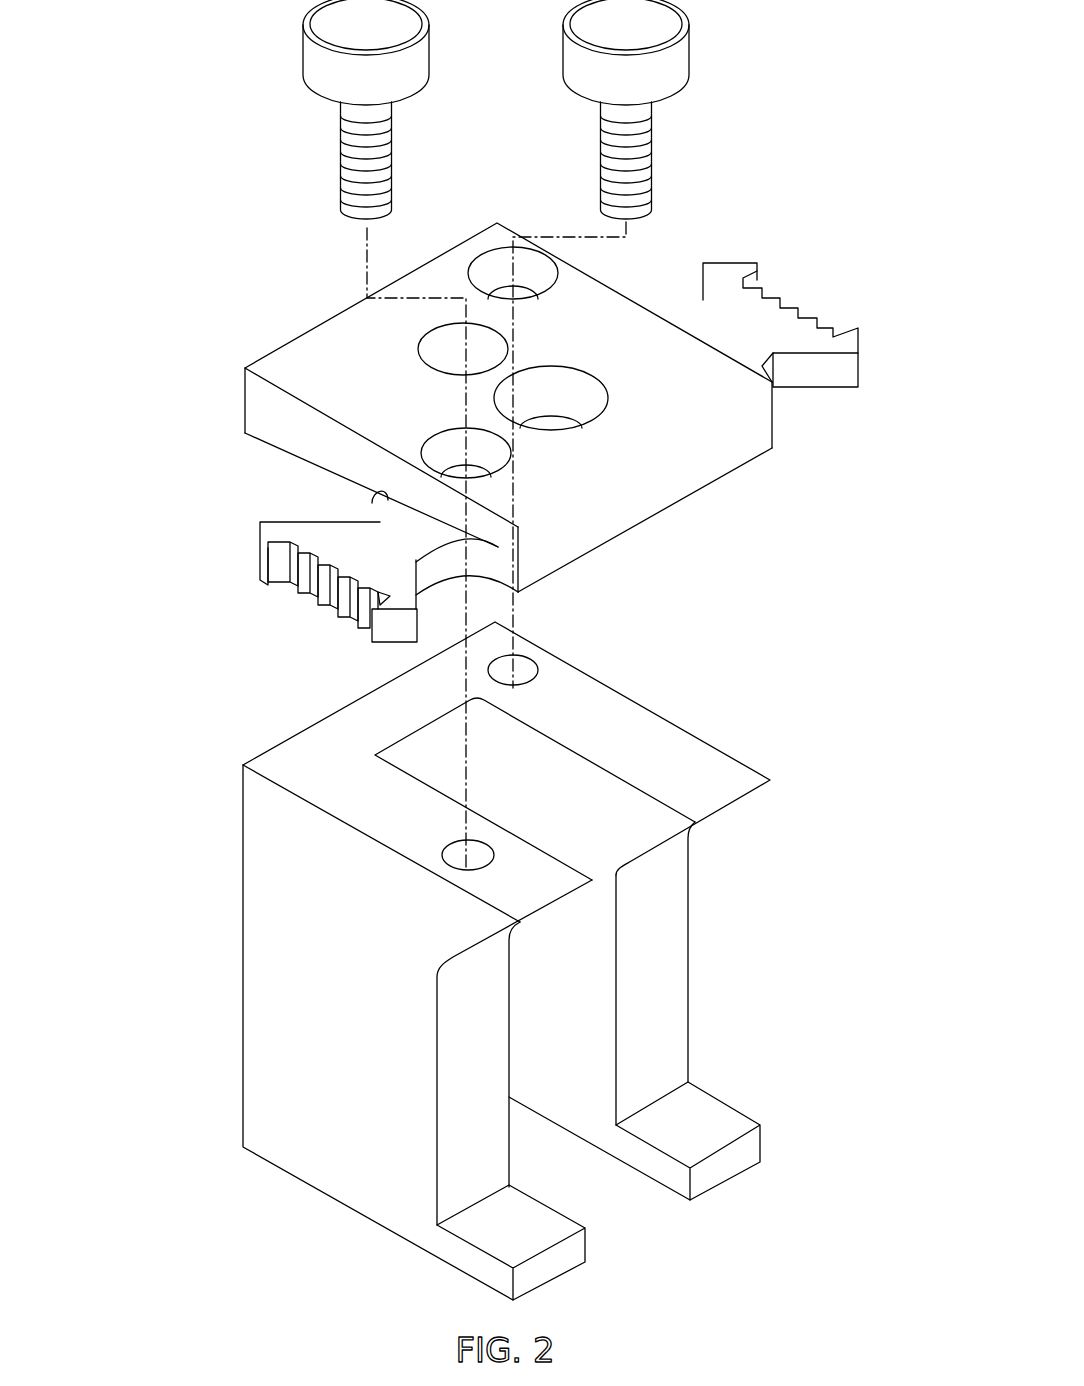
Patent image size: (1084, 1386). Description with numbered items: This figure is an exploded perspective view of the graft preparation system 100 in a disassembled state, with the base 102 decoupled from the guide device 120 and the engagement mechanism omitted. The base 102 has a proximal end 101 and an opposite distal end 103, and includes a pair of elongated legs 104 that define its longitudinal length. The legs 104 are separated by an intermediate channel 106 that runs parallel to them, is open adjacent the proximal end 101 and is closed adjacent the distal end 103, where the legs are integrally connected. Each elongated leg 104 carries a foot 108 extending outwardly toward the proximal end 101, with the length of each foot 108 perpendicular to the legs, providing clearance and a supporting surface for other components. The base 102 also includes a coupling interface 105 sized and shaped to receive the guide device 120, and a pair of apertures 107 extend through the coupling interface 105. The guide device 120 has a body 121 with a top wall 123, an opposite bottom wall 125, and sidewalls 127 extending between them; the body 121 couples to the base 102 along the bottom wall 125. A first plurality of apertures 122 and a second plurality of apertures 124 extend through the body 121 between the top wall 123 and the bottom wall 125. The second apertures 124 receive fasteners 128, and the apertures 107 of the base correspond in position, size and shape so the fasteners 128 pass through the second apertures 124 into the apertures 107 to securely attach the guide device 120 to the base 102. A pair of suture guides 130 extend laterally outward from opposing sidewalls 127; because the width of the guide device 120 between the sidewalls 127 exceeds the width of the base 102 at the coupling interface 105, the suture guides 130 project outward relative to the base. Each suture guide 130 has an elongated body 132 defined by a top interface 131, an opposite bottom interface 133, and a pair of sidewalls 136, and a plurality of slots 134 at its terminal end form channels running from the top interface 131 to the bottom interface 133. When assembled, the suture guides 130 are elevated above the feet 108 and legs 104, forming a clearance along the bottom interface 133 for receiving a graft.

The graft preparation system 100 is at (150, 100).
The proximal end 101 is at (820, 1214).
The base 102 is at (205, 905).
The distal end 103 is at (200, 745).
The elongated legs 104 is at (690, 972).
The coupling interface 105 is at (266, 762).
The intermediate channel 106 is at (580, 1060).
The apertures 107 is at (540, 665).
The foot 108 is at (552, 1222).
The guide device 120 is at (225, 402).
The body 121 is at (636, 396).
The first plurality of apertures 122 is at (428, 348).
The top wall 123 is at (298, 347).
The second plurality of apertures 124 is at (494, 262).
The bottom wall 125 is at (704, 488).
The sidewalls 127 is at (248, 394).
The fasteners 128 is at (308, 60).
The suture guides 130 is at (835, 235).
The top interface 131 is at (720, 270).
The elongated body 132 is at (718, 328).
The bottom interface 133 is at (808, 402).
The slots 134 is at (762, 287).
The sidewalls 136 is at (845, 388).